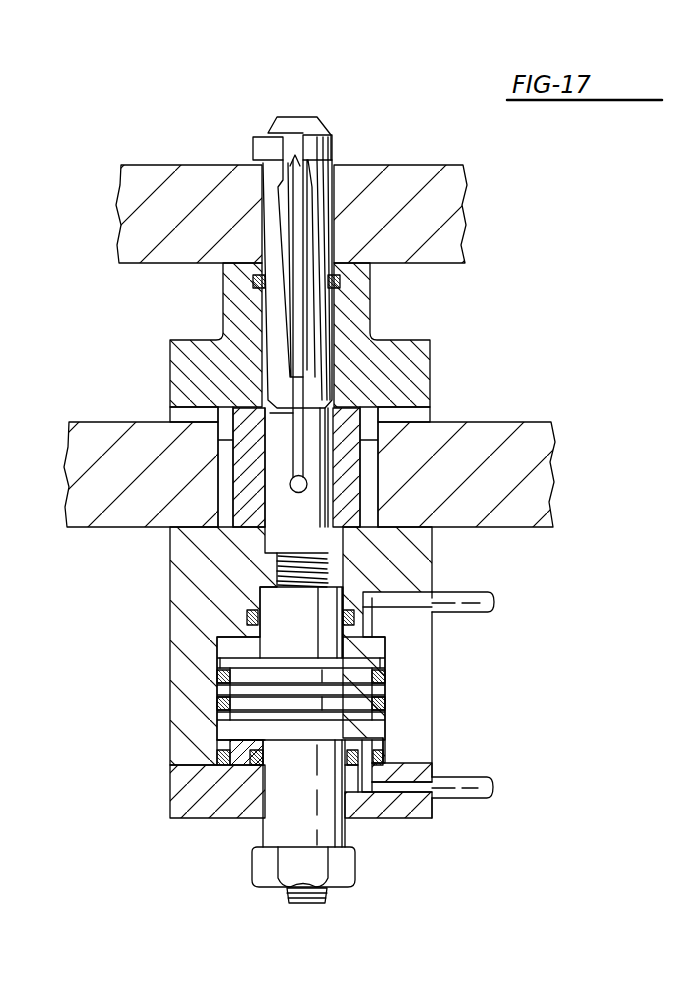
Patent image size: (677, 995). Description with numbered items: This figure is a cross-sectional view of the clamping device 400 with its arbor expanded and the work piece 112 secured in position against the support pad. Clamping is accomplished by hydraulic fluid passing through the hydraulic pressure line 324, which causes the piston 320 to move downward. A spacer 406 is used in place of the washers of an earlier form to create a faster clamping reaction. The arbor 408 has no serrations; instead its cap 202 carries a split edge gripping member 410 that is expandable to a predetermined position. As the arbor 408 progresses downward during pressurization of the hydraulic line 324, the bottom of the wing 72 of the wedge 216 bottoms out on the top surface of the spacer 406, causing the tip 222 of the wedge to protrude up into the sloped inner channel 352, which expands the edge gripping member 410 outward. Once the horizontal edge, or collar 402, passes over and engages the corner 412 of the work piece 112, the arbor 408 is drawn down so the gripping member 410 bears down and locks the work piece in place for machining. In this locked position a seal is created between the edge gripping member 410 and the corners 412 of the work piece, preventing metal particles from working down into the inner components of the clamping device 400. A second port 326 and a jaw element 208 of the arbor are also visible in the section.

The work piece 112 is at (447, 213).
The cap 202 is at (298, 120).
The inner channel 352 is at (293, 140).
The split edge gripping member 410 is at (252, 158).
The collar 402 is at (315, 148).
The corner 412 is at (257, 172).
The tip 222 is at (297, 172).
The collet jaw 208 is at (283, 220).
The wedge 216 is at (297, 323).
The wing 72 is at (298, 390).
The arbor 408 is at (317, 437).
The spacer 406 is at (250, 505).
The hydraulic pressure line 324 is at (468, 598).
The piston 320 is at (378, 689).
The lower port 326 is at (457, 787).
The clamping device 400 is at (125, 348).